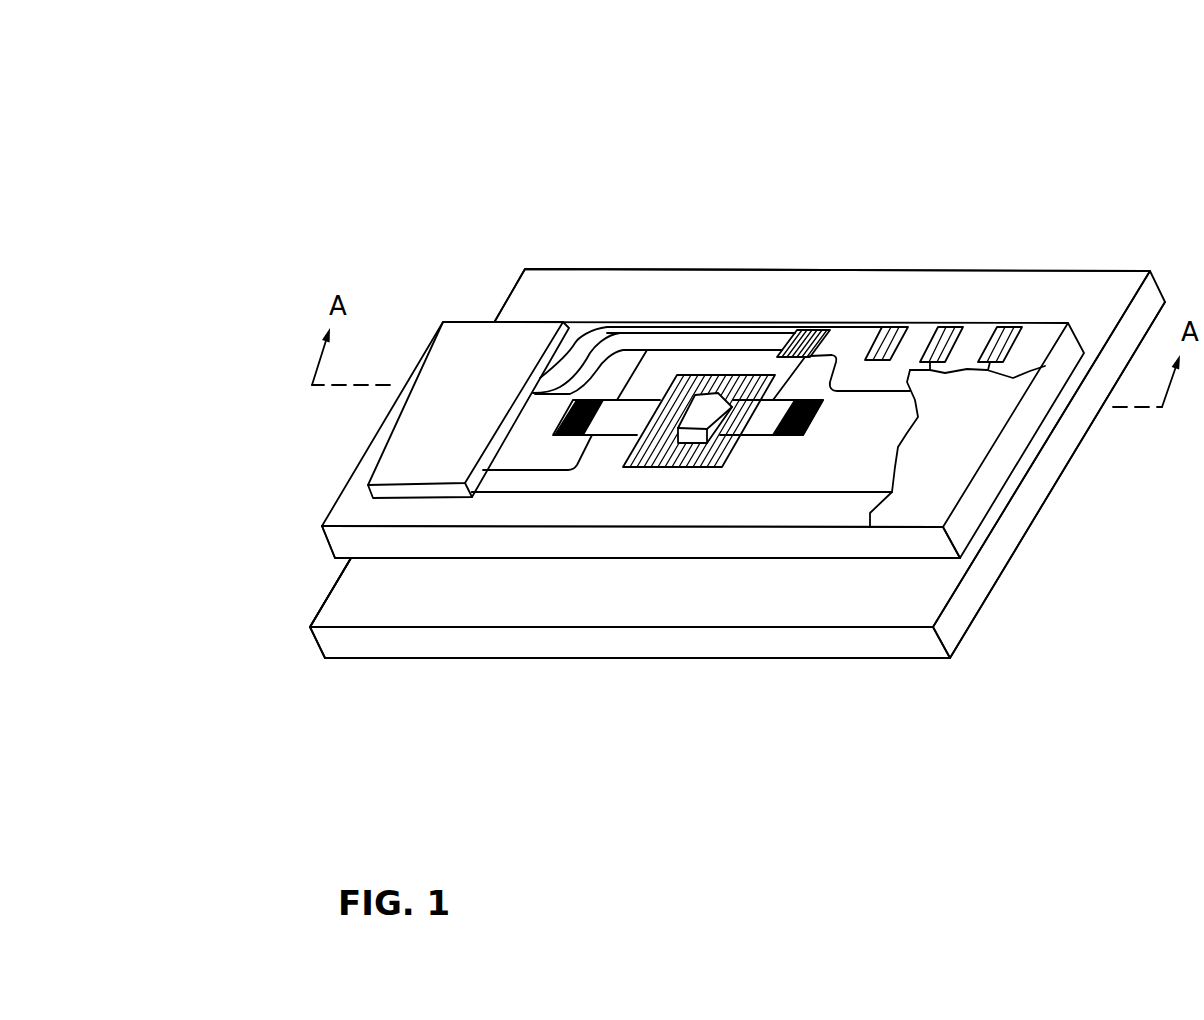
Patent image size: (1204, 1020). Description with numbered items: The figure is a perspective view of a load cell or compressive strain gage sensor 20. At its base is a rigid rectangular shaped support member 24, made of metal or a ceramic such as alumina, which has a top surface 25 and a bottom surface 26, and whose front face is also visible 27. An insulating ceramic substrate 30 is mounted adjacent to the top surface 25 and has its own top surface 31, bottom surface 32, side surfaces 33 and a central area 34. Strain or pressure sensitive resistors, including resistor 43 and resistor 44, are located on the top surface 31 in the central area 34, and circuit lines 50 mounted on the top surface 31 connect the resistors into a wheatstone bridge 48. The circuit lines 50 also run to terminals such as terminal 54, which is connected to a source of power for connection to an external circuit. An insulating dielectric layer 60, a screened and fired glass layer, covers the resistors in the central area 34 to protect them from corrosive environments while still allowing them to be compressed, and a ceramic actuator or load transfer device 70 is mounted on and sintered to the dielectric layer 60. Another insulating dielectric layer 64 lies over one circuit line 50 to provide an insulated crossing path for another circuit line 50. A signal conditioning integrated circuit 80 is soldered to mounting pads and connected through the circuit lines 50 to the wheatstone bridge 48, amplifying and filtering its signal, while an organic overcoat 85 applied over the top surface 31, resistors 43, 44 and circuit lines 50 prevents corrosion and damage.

The compressive strain gage sensor 20 is at (472, 114).
The support member 24 is at (682, 662).
The top surface 25 is at (340, 597).
The bottom surface 26 is at (377, 660).
The base substrate side surface 27 is at (785, 645).
The ceramic substrate 30 is at (323, 485).
The top surface 31 is at (363, 518).
The bottom surface 32 is at (555, 560).
The side surfaces 33 is at (482, 542).
The central area 34 is at (647, 483).
The resistor 43 is at (558, 430).
The resistor 44 is at (822, 420).
The wheatstone bridge 48 is at (889, 714).
The circuit lines 50 is at (580, 330).
The terminal 54 is at (896, 326).
The insulating dielectric layer 60 is at (685, 468).
The insulating dielectric layer 64 is at (822, 330).
The ceramic actuator 70 is at (705, 407).
The integrated circuit 80 is at (477, 358).
The overcoat 85 is at (968, 448).